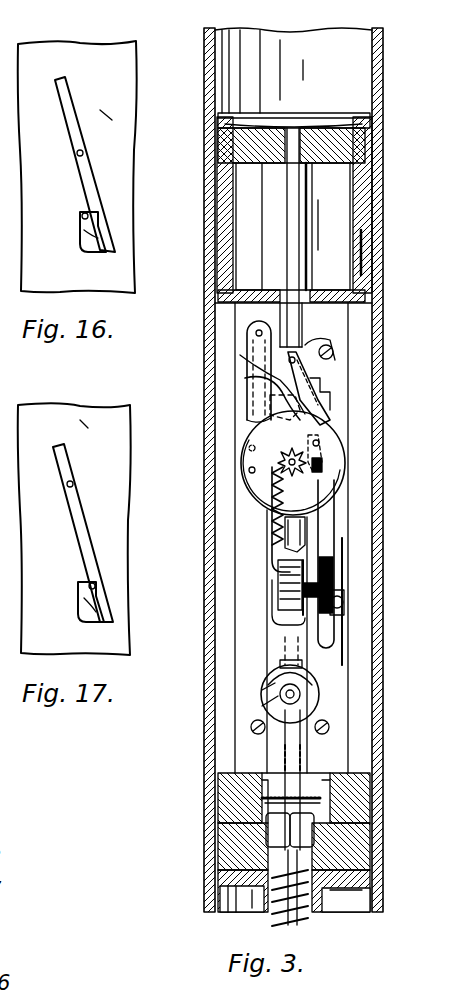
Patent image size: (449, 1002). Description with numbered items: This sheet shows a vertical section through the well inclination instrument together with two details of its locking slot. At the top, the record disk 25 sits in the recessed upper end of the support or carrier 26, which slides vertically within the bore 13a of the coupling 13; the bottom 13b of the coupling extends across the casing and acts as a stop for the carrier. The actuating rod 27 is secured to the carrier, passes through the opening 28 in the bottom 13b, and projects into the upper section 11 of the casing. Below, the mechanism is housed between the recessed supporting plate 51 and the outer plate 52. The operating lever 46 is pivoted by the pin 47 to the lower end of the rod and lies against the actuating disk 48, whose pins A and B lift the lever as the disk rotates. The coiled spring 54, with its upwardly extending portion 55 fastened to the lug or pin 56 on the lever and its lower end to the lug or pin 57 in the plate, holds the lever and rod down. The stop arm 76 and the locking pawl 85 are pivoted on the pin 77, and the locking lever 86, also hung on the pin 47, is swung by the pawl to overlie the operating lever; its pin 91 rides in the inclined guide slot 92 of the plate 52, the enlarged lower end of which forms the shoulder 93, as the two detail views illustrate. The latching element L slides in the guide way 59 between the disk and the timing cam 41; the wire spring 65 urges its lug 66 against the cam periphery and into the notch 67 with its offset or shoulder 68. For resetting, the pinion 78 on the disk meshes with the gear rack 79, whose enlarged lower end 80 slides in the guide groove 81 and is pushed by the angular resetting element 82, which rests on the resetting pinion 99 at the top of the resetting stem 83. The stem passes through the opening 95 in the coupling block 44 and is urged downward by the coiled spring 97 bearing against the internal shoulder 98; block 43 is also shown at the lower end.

In FIG. 3, the upper section 11 is at (384, 62).
In FIG. 3, the record disk 25 is at (315, 128).
In FIG. 3, the support or carrier 26 is at (372, 142).
In FIG. 3, the coupling 13 is at (384, 228).
In FIG. 3, the bore 13a is at (366, 250).
In FIG. 3, the bottom 13b is at (236, 313).
In FIG. 3, the actuating rod 27 is at (240, 268).
In FIG. 3, the opening 28 is at (312, 290).
In FIG. 3, the supporting plate 51 is at (355, 316).
In FIG. 3, the pin 77 is at (247, 342).
In FIG. 3, the locking pawl 85 is at (245, 378).
In FIG. 3, the stop arm 76 is at (280, 402).
In FIG. 16, the locking lever 86 is at (100, 238).
In FIG. 17, the locking lever 86 is at (88, 625).
In FIG. 3, the locking lever 86 is at (335, 390).
In FIG. 3, the pin 47 is at (335, 360).
In FIG. 3, the operating lever 46 is at (340, 416).
In FIG. 3, the actuating disk 48 is at (320, 440).
In FIG. 3, the lug or pin 56 is at (325, 455).
In FIG. 3, the pin B is at (246, 448).
In FIG. 3, the pin A is at (248, 470).
In FIG. 3, the pinion 78 is at (270, 498).
In FIG. 3, the gear rack 79 is at (272, 524).
In FIG. 3, the guide way 59 is at (285, 548).
In FIG. 3, the wire spring 65 is at (275, 598).
In FIG. 3, the upwardly extending portion 55 is at (330, 508).
In FIG. 3, the latching element L is at (340, 535).
In FIG. 3, the coiled spring 54 is at (332, 564).
In FIG. 3, the lug or pin 57 is at (344, 628).
In FIG. 3, the enlarged lower end 80 is at (285, 634).
In FIG. 3, the guide groove 81 is at (280, 664).
In FIG. 3, the offset or shoulder 68 is at (322, 679).
In FIG. 3, the timing cam 41 is at (322, 710).
In FIG. 3, the lug 66 is at (262, 690).
In FIG. 3, the notch 67 is at (262, 706).
In FIG. 3, the resetting element 82 is at (305, 752).
In FIG. 3, the resetting pinion 99 is at (262, 800).
In FIG. 3, the block 43 is at (350, 797).
In FIG. 3, the coupling block 44 is at (345, 845).
In FIG. 3, the opening 95 is at (218, 866).
In FIG. 3, the resetting stem 83 is at (350, 876).
In FIG. 3, the internal shoulder 98 is at (220, 888).
In FIG. 3, the coiled spring 97 is at (330, 906).
In FIG. 16, the supporting plate 52 is at (105, 118).
In FIG. 17, the supporting plate 52 is at (85, 420).
In FIG. 16, the guide slot 92 is at (76, 154).
In FIG. 17, the guide slot 92 is at (72, 482).
In FIG. 16, the shoulder 93 is at (84, 213).
In FIG. 17, the shoulder 93 is at (78, 600).
In FIG. 16, the pin 91 is at (95, 222).
In FIG. 17, the pin 91 is at (90, 582).